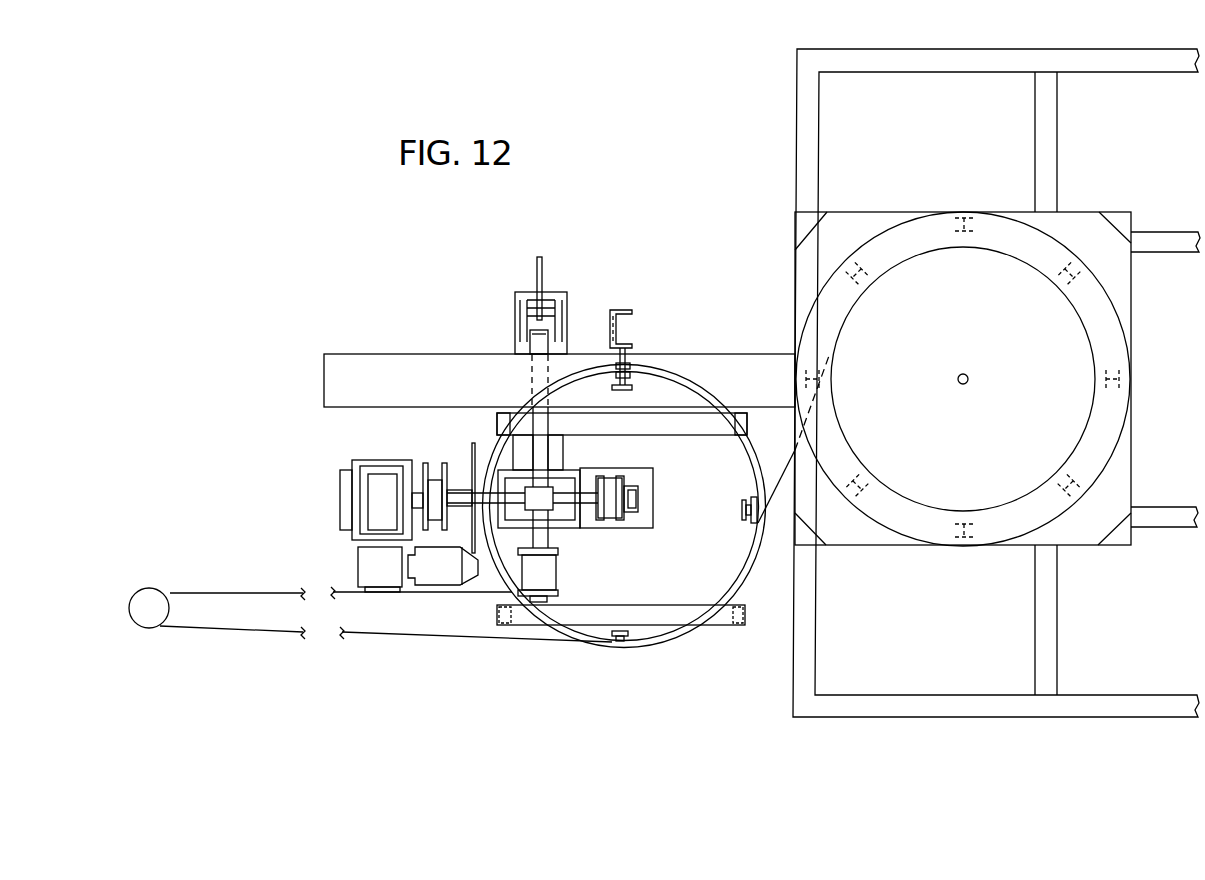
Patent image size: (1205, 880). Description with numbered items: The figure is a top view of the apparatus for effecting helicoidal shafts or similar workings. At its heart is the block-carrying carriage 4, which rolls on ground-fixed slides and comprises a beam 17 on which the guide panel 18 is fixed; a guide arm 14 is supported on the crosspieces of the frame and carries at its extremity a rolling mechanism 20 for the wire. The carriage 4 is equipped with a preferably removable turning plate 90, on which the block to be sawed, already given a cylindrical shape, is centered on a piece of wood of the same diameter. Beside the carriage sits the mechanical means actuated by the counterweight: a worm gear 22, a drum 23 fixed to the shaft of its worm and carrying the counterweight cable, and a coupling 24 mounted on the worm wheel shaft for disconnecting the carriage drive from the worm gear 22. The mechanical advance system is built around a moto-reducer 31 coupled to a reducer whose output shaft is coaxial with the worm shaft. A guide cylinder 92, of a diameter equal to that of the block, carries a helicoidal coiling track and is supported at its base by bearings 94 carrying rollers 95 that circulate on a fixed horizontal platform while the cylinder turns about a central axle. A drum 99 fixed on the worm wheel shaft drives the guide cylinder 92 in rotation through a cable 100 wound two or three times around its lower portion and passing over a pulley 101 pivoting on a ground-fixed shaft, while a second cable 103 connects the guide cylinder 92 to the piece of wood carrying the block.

The block-carrying carriage 4 is at (1147, 703).
The guide arm 14 is at (610, 310).
The beam 17 is at (335, 377).
The guide panel 18 is at (528, 694).
The rolling mechanism 20 is at (630, 368).
The worm gear 22 is at (572, 518).
The drum 23 is at (600, 490).
The coupling 24 is at (572, 292).
The moto-reducer 31 is at (447, 568).
The turning plate 90 is at (1102, 422).
The guide cylinder 92 is at (667, 382).
The bearings 94 is at (755, 518).
The rollers 95 is at (636, 638).
The drum 99 is at (538, 578).
The cable 100 is at (205, 628).
The pulley 101 is at (158, 592).
The second cable 103 is at (785, 467).